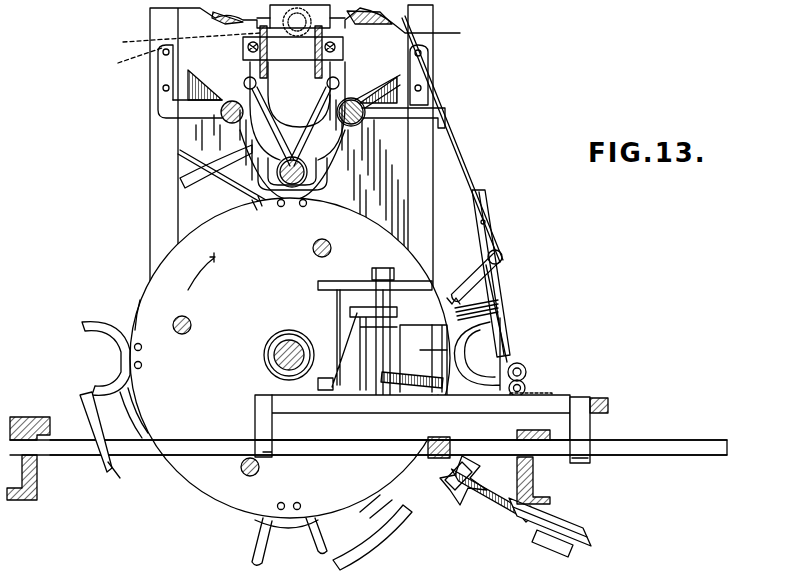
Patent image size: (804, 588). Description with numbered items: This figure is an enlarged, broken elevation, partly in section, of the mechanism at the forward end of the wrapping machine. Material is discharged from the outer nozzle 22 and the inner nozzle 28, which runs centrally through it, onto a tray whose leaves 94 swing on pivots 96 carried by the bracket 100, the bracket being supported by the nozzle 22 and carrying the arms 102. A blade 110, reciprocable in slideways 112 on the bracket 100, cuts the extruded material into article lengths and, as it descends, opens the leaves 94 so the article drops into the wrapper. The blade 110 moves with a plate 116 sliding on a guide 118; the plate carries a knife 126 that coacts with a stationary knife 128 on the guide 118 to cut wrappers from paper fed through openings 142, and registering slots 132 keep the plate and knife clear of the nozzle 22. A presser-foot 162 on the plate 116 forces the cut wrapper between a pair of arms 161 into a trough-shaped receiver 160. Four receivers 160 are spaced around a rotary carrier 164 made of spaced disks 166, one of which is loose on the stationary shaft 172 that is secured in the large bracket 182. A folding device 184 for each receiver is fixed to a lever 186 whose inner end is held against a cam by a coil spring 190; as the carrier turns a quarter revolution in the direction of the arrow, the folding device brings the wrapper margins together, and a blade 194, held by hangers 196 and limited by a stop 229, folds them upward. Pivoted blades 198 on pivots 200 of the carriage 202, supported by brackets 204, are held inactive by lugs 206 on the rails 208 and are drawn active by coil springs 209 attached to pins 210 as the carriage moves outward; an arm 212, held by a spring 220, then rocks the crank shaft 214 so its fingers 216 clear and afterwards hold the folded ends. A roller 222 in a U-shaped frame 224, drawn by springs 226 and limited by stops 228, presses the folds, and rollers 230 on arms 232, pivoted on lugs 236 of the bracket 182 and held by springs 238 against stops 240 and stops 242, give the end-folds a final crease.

The nozzle 22 is at (179, 310).
The nozzle 28 is at (126, 63).
The leaves 94 is at (297, 111).
The pivots 96 is at (246, 46).
The bracket 100 is at (462, 31).
The arms 102 is at (212, 20).
The blade 110 is at (293, 50).
The slideways 112 is at (342, 30).
The plate 116 is at (300, 178).
The guide 118 is at (420, 162).
The knife 126 is at (182, 100).
The stationary knife 128 is at (205, 143).
The registering slots 132 is at (292, 153).
The openings 142 is at (190, 158).
The receiver 160 is at (118, 340).
The arms 161 is at (160, 80).
The presser-foot 162 is at (350, 100).
The rotary carrier 164 is at (160, 282).
The disks 166 is at (136, 292).
The stationary shaft 172 is at (262, 355).
The bracket 182 is at (26, 505).
The folding device 184 is at (497, 368).
The lever 186 is at (125, 468).
The coil spring 190 is at (450, 296).
The blade 194 is at (488, 225).
The hangers 196 is at (480, 192).
The pivoted blades 198 is at (423, 359).
The pivots 200 is at (426, 358).
The carriage 202 is at (585, 438).
The brackets 204 is at (355, 312).
The lugs 206 is at (437, 460).
The rails 208 is at (730, 448).
The coil springs 209 is at (415, 388).
The screws or pins 210 is at (450, 385).
The arm 212 is at (415, 280).
The crank shaft 214 is at (504, 258).
The fingers 216 is at (500, 290).
The spring 220 is at (340, 317).
The roller 222 is at (526, 368).
The U-shaped frame 224 is at (526, 380).
The springs 226 is at (575, 425).
The stops 228 is at (540, 396).
The stop 229 is at (448, 120).
The rollers 230 is at (462, 495).
The arms 232 is at (488, 498).
The lugs 236 is at (594, 537).
The springs 238 is at (527, 520).
The stops 240 is at (456, 470).
The stops 242 is at (580, 560).